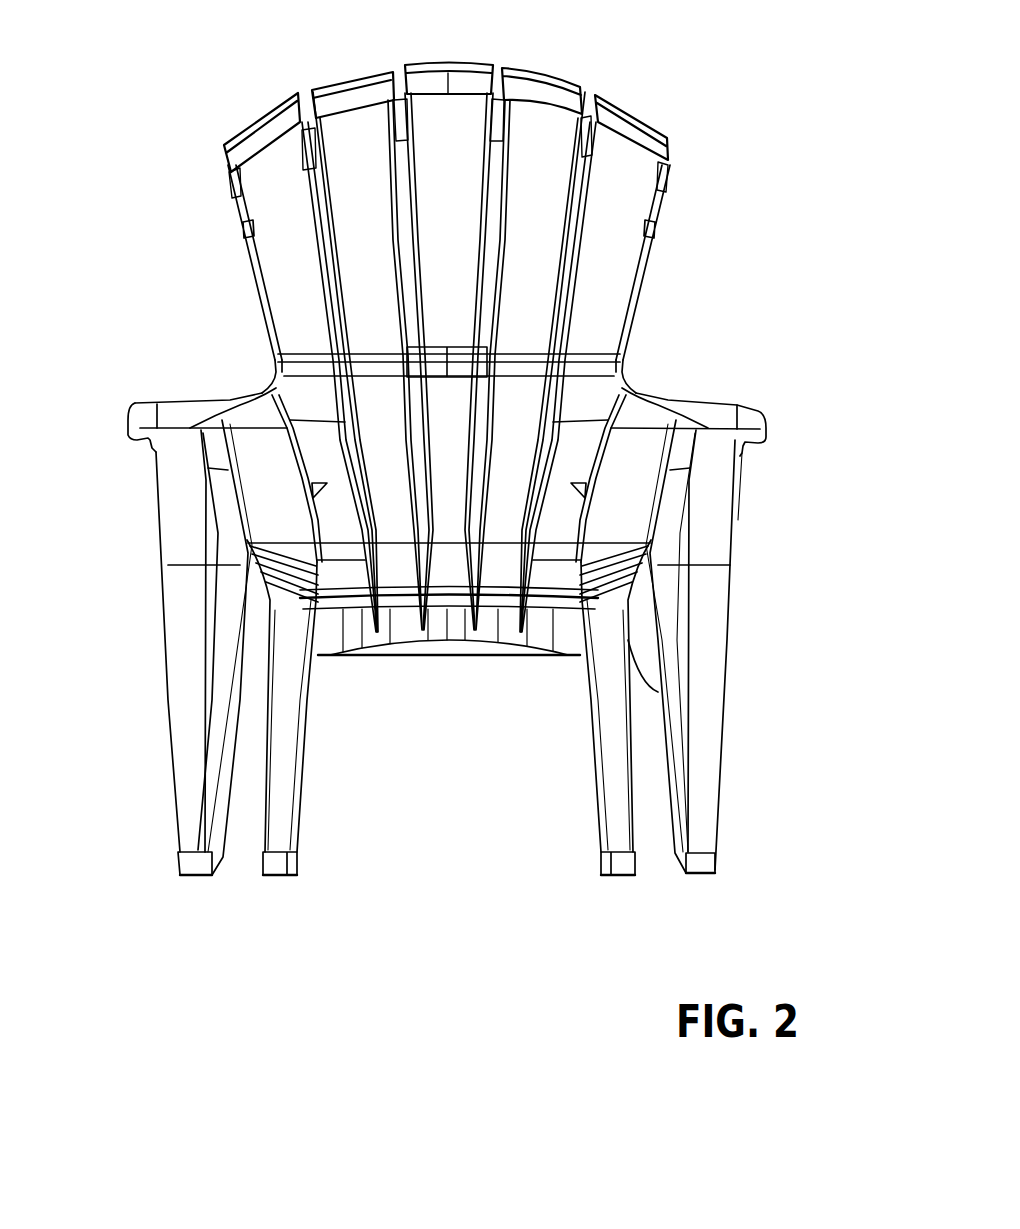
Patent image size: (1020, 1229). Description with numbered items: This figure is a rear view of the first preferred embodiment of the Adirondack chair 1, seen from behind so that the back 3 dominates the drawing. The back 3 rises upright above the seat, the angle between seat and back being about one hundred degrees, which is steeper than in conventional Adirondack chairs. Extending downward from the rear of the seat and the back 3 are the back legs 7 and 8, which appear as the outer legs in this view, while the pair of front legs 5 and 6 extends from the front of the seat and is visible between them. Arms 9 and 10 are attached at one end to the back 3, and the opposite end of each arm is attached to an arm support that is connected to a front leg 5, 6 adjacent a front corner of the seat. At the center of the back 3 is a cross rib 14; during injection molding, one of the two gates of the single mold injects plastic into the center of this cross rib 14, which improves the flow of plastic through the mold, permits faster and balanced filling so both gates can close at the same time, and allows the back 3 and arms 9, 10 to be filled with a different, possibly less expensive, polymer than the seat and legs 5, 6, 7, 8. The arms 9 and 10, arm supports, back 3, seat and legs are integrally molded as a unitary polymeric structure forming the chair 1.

The Adirondack chair 1 is at (170, 128).
The back 3 is at (628, 107).
The front leg 5 is at (587, 753).
The front leg 6 is at (307, 800).
The back leg 7 is at (715, 700).
The back leg 8 is at (188, 707).
The arm 9 is at (735, 403).
The arm 10 is at (175, 409).
The cross rib 14 is at (465, 370).